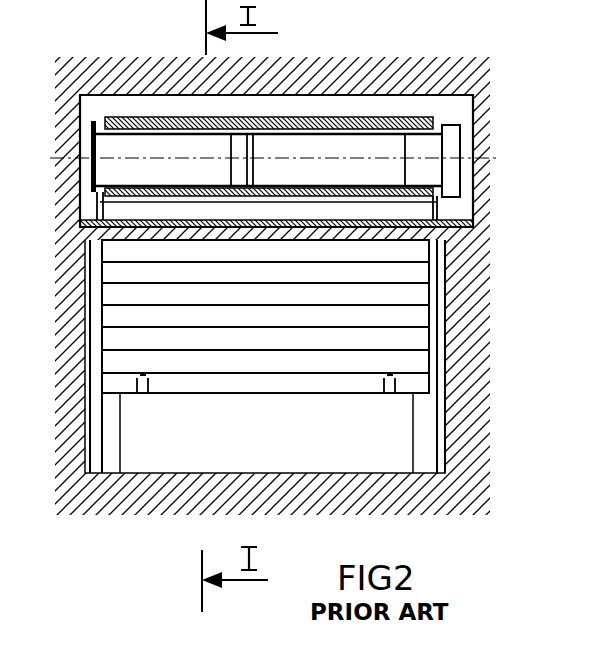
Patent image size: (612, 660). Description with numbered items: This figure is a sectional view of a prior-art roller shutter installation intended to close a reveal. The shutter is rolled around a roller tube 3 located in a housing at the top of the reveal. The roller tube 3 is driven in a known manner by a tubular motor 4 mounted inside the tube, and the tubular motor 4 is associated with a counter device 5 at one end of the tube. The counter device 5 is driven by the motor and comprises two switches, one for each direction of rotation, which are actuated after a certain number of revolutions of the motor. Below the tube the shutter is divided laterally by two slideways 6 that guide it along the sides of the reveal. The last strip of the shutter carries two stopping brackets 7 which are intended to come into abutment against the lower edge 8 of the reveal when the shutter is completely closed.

The roller tube 3 is at (128, 148).
The tubular motor 4 is at (283, 118).
The counter device 5 is at (417, 160).
The slideways 6 is at (107, 445).
The stopping brackets 7 is at (143, 395).
The lower edge 8 is at (210, 472).